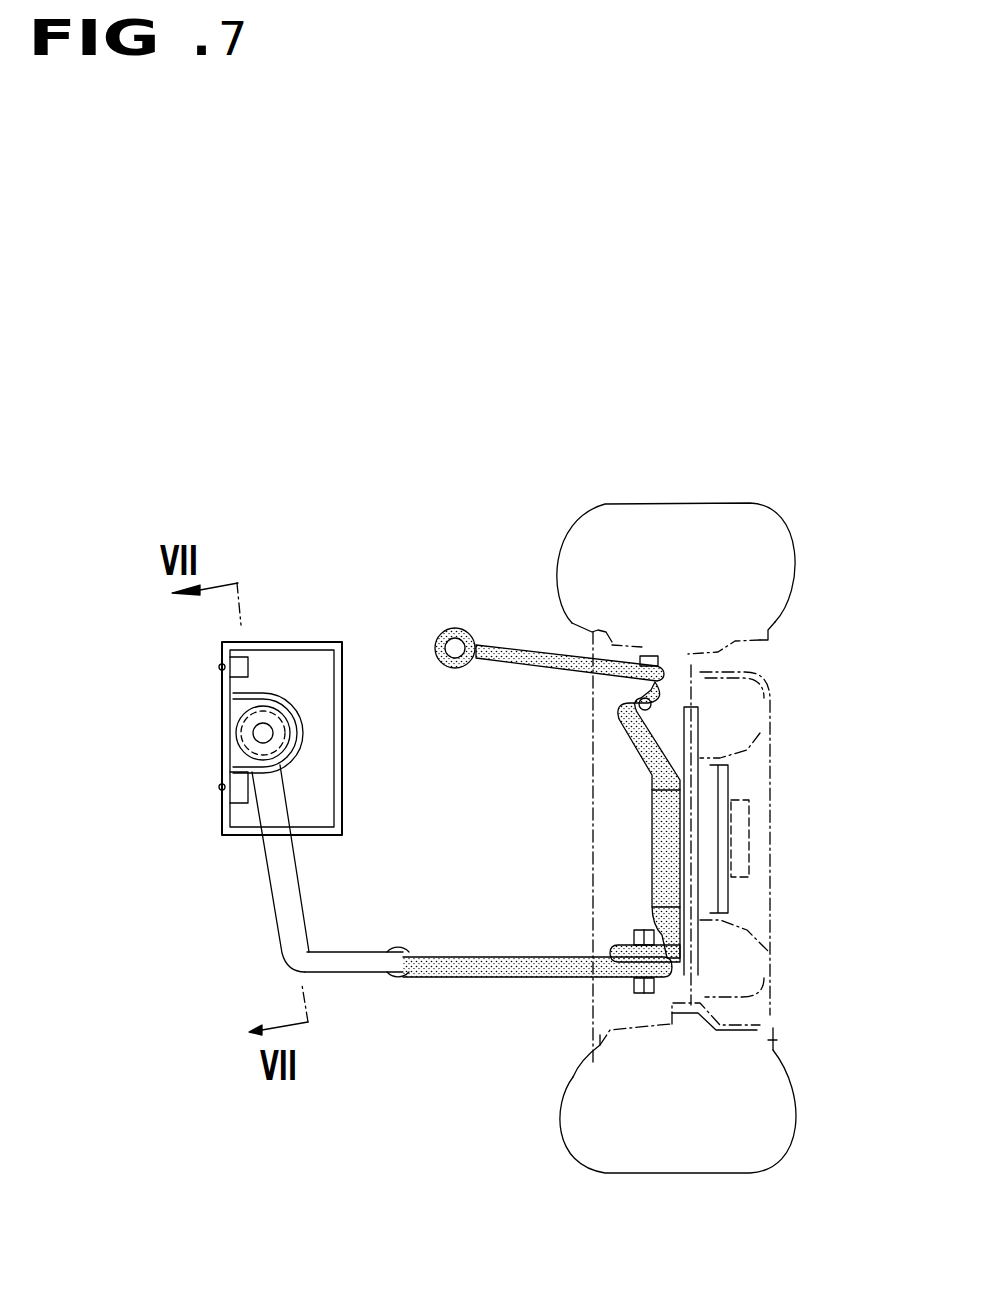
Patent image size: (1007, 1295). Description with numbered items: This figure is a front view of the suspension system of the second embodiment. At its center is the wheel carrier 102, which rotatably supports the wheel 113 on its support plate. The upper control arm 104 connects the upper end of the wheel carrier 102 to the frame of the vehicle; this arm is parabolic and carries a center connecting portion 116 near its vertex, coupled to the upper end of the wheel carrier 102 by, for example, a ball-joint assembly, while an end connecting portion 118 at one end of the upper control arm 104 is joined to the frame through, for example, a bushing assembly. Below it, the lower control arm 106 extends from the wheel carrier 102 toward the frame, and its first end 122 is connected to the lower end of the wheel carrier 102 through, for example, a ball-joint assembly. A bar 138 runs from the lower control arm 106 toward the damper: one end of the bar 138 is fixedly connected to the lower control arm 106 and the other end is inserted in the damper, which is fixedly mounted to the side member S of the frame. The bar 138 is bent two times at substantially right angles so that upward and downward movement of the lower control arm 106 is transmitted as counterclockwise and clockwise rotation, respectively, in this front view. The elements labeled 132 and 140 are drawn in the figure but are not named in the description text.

The wheel carrier 102 is at (668, 840).
The upper control arm 104 is at (521, 640).
The lower control arm 106 is at (440, 998).
The wheel 113 is at (745, 678).
The center connecting portion 116 is at (645, 666).
The end connecting portion 118 is at (452, 630).
The first end 122 is at (637, 988).
The hub pivot 132 is at (248, 738).
The bar 138 is at (353, 958).
The inclined tube member 140 is at (279, 896).
The side member S is at (297, 642).